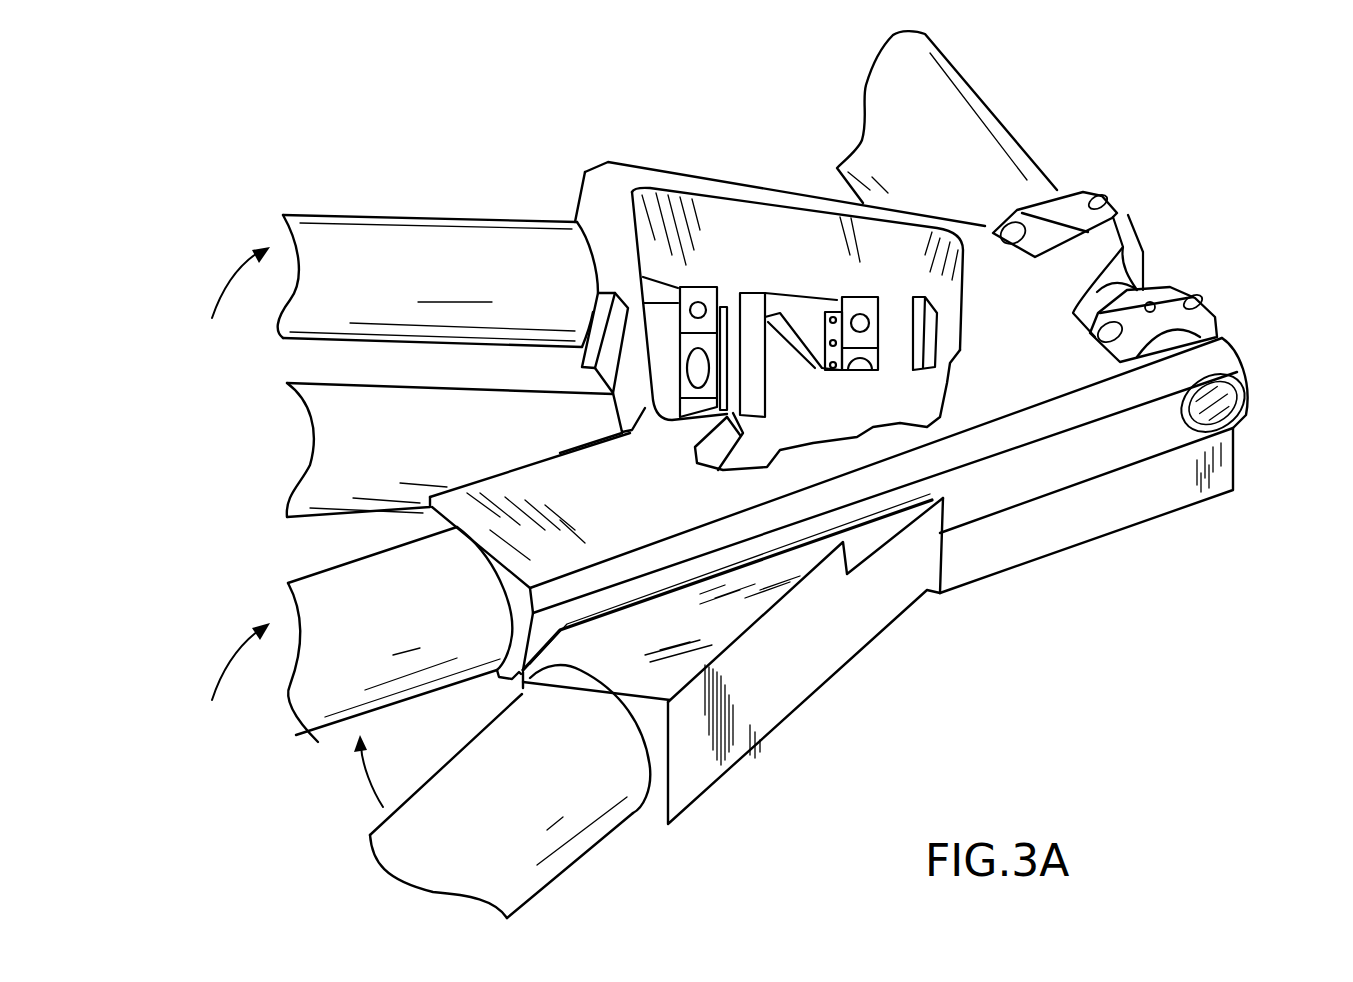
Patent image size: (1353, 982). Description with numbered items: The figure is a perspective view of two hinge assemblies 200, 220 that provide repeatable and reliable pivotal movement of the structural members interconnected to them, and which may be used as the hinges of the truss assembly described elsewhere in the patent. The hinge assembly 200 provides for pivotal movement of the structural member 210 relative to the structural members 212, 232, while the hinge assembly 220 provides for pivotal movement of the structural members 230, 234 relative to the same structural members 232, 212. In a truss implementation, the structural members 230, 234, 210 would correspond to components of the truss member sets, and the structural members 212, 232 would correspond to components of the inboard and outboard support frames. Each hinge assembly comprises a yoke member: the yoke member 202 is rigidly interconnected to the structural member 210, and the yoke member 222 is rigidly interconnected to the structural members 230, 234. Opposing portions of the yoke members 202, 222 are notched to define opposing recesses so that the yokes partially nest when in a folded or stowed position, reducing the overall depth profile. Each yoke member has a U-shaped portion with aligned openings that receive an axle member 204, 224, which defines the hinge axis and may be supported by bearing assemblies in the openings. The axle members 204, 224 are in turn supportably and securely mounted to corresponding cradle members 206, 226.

The hinge assembly 200 is at (754, 252).
The yoke member 202 is at (765, 320).
The axle member 204 is at (738, 360).
The cradle member 206 is at (708, 287).
The structural member 210 is at (517, 867).
The structural member 212 is at (317, 487).
The hinge assembly 220 is at (1214, 278).
The yoke member 222 is at (1108, 237).
The axle member 224 is at (1138, 252).
The cradle member 226 is at (1063, 200).
The structural member 230 is at (310, 717).
The structural member 232 is at (1002, 163).
The structural member 234 is at (325, 238).